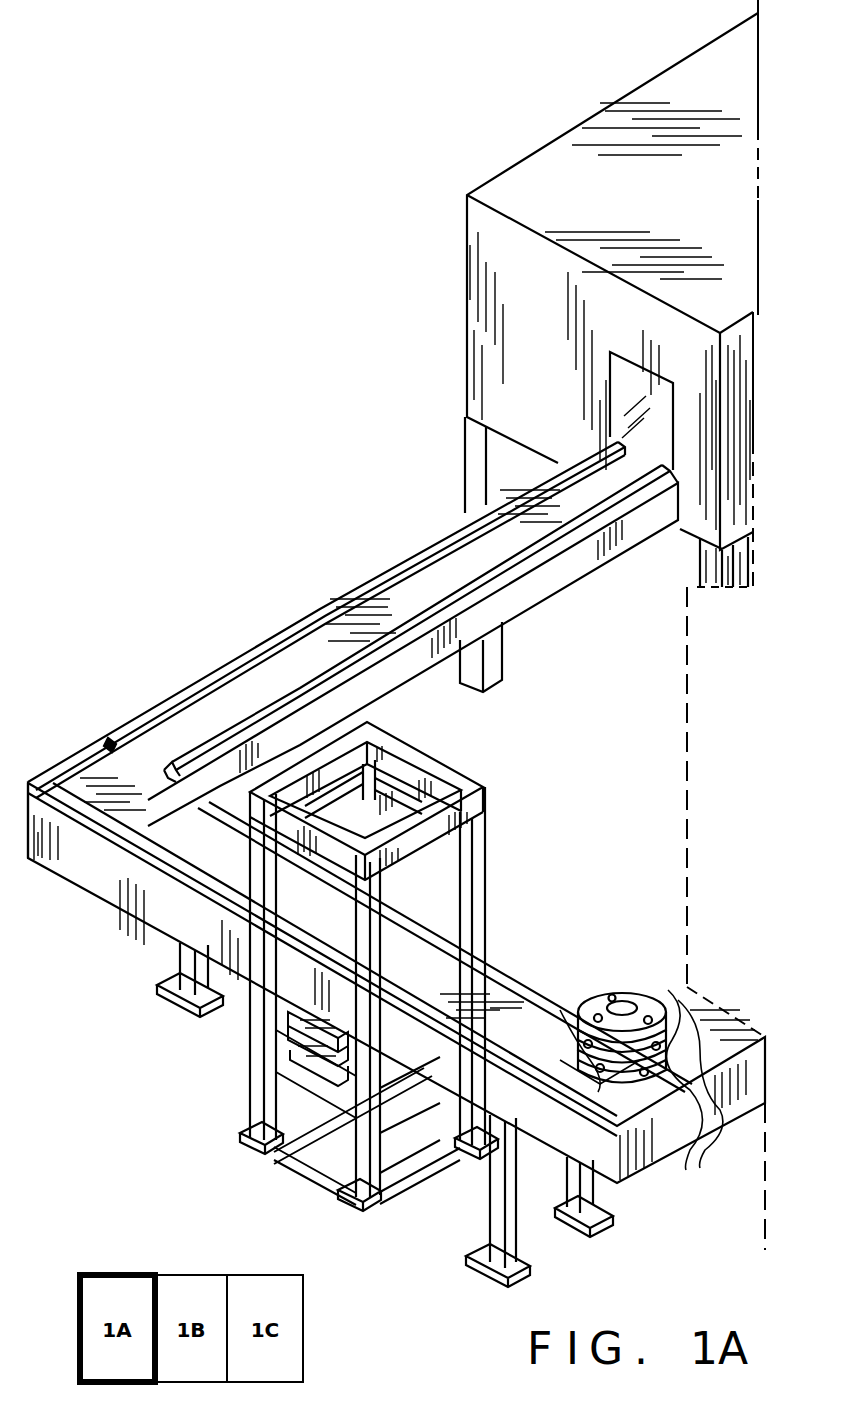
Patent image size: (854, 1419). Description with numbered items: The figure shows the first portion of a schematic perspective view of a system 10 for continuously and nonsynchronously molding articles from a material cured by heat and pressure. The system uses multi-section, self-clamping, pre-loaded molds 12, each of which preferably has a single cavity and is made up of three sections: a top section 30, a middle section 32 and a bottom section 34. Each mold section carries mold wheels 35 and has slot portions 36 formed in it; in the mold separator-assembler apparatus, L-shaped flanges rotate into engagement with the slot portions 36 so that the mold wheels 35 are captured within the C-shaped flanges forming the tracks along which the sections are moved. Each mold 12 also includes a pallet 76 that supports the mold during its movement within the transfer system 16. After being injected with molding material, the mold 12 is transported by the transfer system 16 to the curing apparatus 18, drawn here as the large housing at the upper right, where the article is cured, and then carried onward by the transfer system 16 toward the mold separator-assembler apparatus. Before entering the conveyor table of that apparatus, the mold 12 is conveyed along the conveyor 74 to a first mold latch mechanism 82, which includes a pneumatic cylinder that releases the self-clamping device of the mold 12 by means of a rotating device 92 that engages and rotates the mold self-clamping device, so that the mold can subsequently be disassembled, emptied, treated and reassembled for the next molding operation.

The system 10 is at (285, 270).
The mold 12 is at (636, 982).
The transfer system 16 is at (312, 575).
The curing apparatus 18 is at (510, 160).
The top section 30 is at (578, 1000).
The middle section 32 is at (570, 1010).
The bottom section 34 is at (575, 1093).
The mold wheels 35 is at (642, 1088).
The slot portions 36 is at (668, 985).
The conveyor 74 is at (181, 737).
The pallet 76 is at (615, 1110).
The mold latch mechanism 82 is at (300, 1152).
The rotating device 92 is at (425, 882).